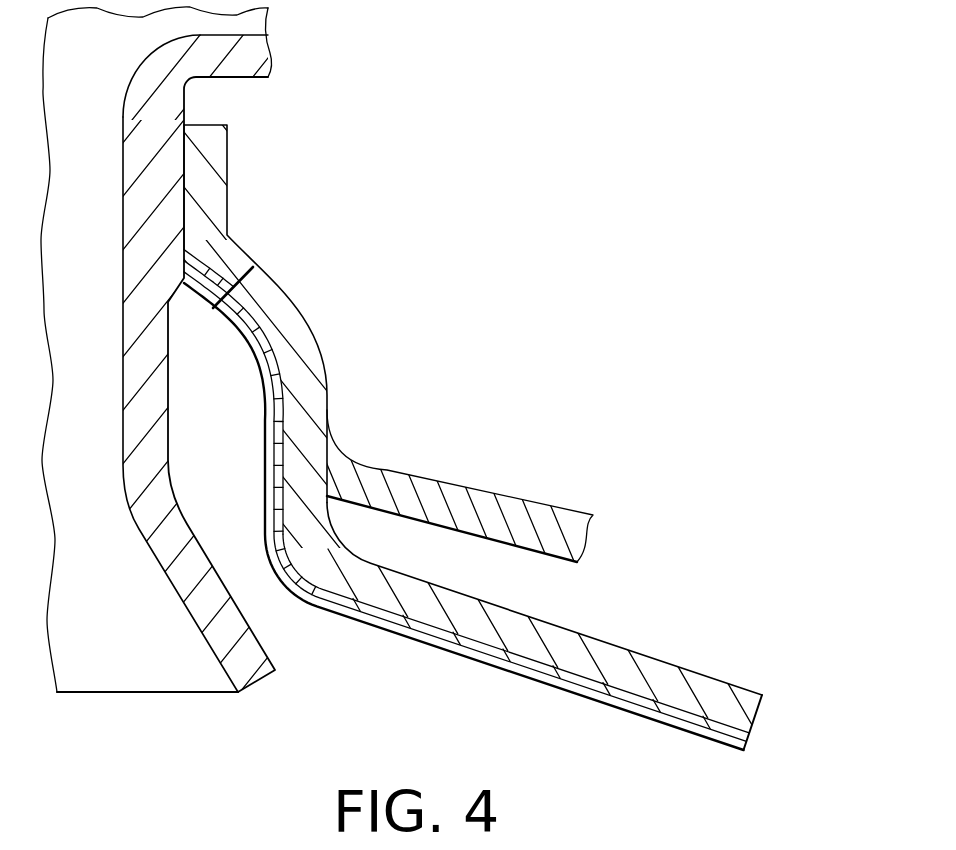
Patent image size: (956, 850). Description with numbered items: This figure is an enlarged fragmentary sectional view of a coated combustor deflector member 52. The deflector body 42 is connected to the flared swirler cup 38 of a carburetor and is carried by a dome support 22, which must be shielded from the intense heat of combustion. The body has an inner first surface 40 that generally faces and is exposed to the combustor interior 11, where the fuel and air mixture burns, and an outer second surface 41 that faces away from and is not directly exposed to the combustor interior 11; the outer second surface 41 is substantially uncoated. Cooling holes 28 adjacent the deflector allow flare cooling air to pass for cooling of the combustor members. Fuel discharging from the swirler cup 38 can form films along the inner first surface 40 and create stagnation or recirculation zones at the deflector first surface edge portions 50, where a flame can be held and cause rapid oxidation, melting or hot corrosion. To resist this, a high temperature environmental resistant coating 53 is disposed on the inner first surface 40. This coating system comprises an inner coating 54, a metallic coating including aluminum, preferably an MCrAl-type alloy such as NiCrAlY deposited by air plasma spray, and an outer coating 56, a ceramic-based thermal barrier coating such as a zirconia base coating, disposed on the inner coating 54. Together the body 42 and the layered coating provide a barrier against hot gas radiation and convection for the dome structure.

The combustor interior 11 is at (230, 742).
The swirler cup 38 is at (94, 291).
The cooling holes 28 is at (257, 310).
The dome support 22 is at (483, 498).
The body outer second surface 41 is at (560, 623).
The deflector body 42 is at (632, 672).
The body inner first surface 40 is at (605, 688).
The deflector first surface edge portions 50 is at (693, 740).
The inner coating 54 is at (447, 635).
The outer coating 56 is at (398, 633).
The coated combustor deflector member 52 is at (550, 712).
The high temperature environmental resistant coating 53 is at (772, 742).